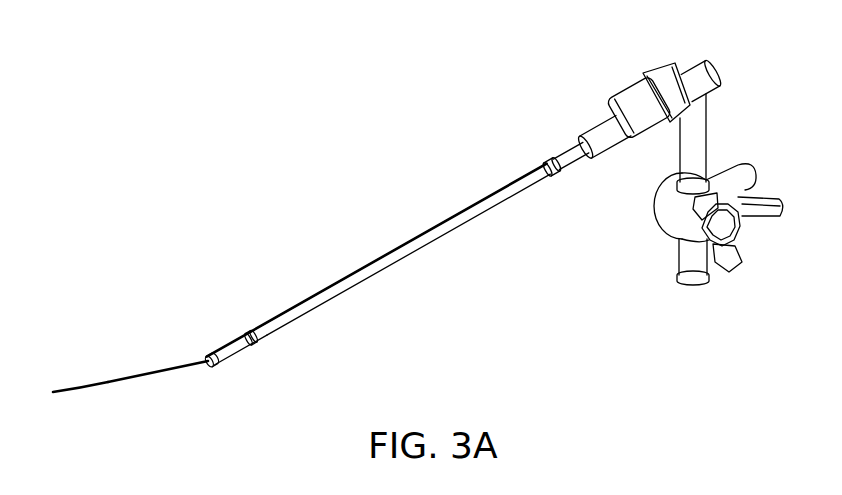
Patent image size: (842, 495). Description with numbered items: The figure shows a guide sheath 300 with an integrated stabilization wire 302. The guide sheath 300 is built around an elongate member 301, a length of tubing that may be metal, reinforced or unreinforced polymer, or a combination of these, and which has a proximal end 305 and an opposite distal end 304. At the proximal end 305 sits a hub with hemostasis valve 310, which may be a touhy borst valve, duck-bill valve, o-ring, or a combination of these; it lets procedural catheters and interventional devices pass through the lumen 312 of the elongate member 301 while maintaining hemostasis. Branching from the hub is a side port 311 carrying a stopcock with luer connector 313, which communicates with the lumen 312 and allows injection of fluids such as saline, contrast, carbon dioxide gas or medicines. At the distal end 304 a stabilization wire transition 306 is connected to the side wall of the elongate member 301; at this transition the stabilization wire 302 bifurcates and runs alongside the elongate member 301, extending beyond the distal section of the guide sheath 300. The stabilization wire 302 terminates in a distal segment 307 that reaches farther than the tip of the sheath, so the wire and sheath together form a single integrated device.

The guide sheath 300 is at (449, 115).
The elongate member 301 is at (408, 259).
The stabilization wire 302 is at (167, 366).
The distal end 304 is at (247, 370).
The proximal end 305 is at (595, 86).
The stabilization wire transition 306 is at (255, 330).
The distal segment 307 is at (72, 386).
The hub with hemostasis valve 310 is at (683, 71).
The side port 311 is at (658, 152).
The lumen 312 is at (208, 371).
The stopcock with luer connector 313 is at (690, 284).